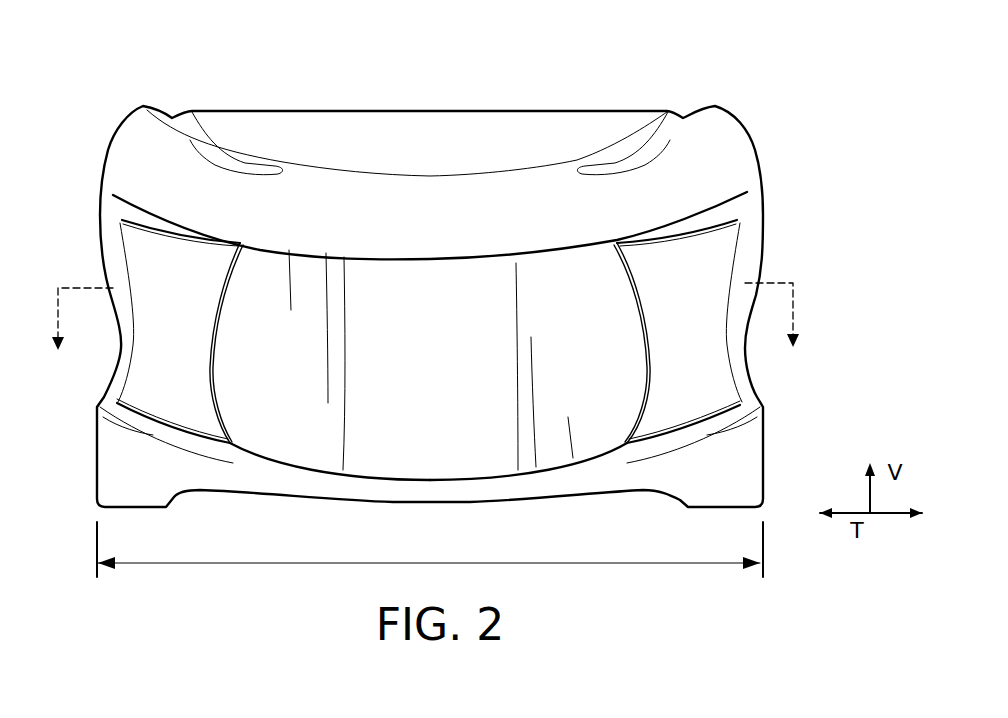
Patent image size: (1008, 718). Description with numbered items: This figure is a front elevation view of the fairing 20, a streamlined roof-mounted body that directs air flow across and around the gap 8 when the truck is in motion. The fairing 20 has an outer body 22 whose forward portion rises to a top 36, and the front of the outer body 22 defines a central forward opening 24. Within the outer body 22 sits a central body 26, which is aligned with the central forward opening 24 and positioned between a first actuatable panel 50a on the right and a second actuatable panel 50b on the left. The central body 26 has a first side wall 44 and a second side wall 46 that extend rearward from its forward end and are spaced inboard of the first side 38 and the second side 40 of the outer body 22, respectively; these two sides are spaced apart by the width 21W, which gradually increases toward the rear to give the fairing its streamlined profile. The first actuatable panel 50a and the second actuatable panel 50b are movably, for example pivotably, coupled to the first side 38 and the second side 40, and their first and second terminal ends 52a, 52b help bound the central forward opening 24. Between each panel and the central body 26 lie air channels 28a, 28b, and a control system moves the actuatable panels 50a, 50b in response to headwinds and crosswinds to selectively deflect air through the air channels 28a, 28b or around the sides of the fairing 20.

The fairing 20 is at (95, 57).
The outer body 22 is at (106, 134).
The central forward opening 24 is at (604, 251).
The central body 26 is at (407, 337).
The first air channel 28a is at (231, 381).
The second air channel 28b is at (629, 367).
The top 36 is at (488, 126).
The first side 38 is at (100, 213).
The second side 40 is at (756, 221).
The first side wall 44 is at (239, 307).
The second side wall 46 is at (589, 331).
The first actuatable panel 50a is at (151, 331).
The second actuatable panel 50b is at (668, 332).
The first terminal end 52a is at (213, 352).
The second terminal end 52b is at (633, 290).
The gap 8 is at (425, 335).
The width 21W is at (288, 565).